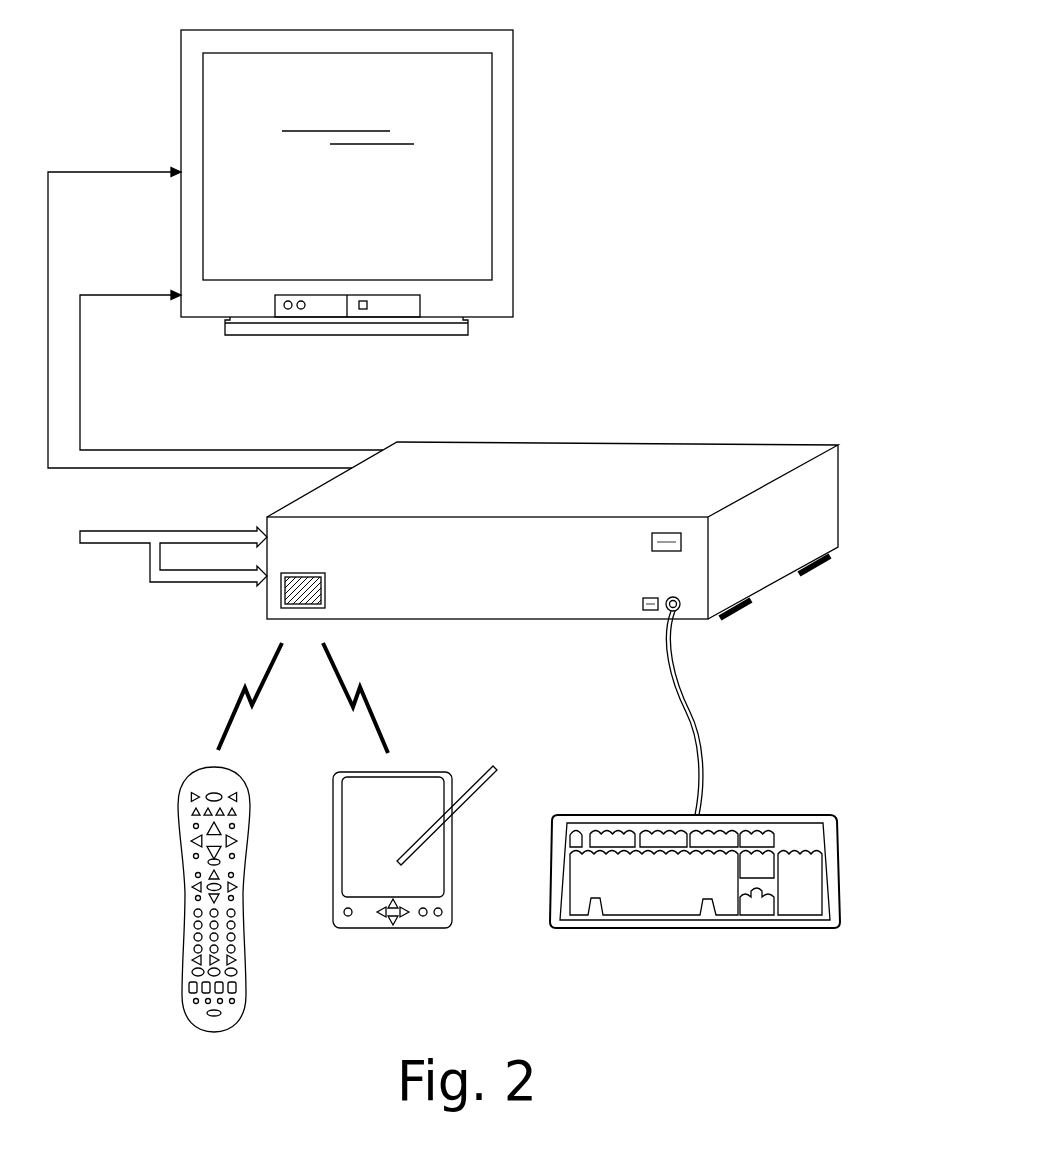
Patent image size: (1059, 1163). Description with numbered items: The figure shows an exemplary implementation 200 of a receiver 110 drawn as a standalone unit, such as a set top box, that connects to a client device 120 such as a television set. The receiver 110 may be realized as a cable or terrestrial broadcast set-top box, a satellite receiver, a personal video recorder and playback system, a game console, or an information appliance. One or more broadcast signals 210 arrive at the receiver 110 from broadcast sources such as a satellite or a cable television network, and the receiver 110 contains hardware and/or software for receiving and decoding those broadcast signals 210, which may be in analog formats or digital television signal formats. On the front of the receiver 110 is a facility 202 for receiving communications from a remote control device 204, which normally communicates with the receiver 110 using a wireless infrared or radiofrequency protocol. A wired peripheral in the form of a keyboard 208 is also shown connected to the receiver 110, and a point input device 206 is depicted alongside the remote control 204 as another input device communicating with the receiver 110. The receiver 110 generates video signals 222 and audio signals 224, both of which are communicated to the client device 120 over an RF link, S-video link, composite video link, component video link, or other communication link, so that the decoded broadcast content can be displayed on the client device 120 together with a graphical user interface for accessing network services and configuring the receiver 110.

The exemplary implementation 200 is at (637, 58).
The client device 120 is at (458, 262).
The video signal 222 is at (143, 204).
The audio signal 224 is at (142, 329).
The receiver 110 is at (461, 436).
The facility for receiving communications 202 is at (317, 573).
The broadcast signals 210 is at (137, 542).
The remote control device 204 is at (180, 795).
The point input device 206 is at (410, 772).
The keyboard 208 is at (742, 815).